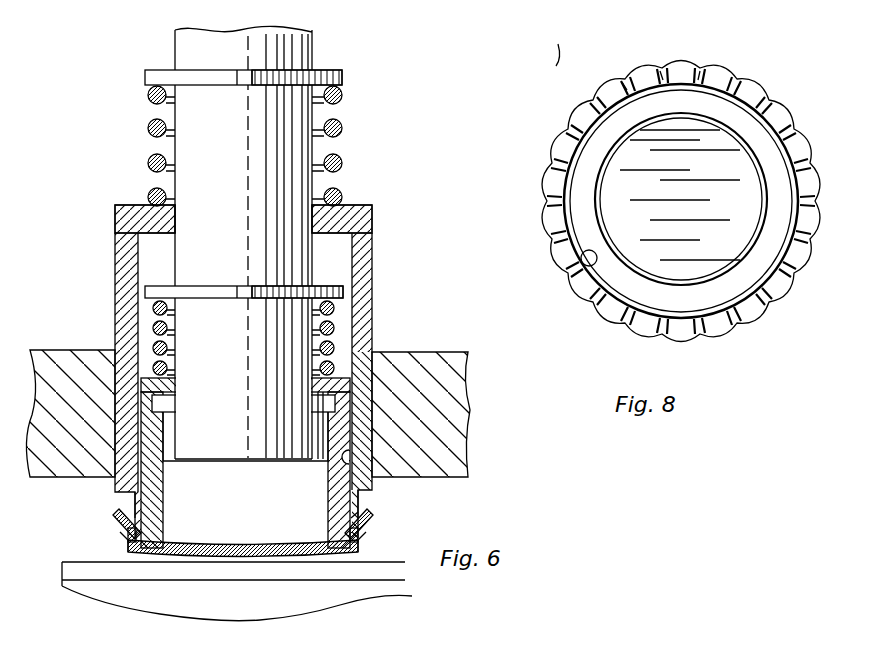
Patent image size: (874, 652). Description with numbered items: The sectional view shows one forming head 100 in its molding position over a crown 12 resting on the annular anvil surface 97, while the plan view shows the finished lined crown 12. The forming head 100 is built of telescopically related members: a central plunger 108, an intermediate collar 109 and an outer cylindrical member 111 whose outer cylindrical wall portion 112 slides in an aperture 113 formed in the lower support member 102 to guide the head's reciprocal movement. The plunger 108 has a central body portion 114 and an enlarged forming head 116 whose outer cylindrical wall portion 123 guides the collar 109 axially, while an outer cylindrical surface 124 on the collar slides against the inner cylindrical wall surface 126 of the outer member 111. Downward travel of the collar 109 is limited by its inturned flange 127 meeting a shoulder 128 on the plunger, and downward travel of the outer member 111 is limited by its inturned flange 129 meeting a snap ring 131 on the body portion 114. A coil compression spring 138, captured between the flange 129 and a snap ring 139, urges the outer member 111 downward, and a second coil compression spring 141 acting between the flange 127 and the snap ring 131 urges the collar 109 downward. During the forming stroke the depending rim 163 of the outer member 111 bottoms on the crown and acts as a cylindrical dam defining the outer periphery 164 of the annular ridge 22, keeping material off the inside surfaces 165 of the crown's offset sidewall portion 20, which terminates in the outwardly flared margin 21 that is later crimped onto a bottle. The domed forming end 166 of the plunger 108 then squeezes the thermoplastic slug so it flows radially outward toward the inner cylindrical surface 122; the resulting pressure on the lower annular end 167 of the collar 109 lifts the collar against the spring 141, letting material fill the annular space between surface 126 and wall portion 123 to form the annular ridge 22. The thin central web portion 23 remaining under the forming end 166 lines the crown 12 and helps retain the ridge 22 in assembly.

In FIG. 6, the forming head 100 is at (358, 128).
In FIG. 6, the snap ring 139 is at (147, 82).
In FIG. 6, the coil compression spring 138 is at (343, 98).
In FIG. 6, the central body portion 114 is at (186, 143).
In FIG. 6, the inturned flange 129 is at (345, 212).
In FIG. 6, the central plunger 108 is at (173, 250).
In FIG. 6, the outer cylindrical member 111 is at (125, 288).
In FIG. 6, the outer cylindrical wall portion 112 is at (374, 296).
In FIG. 6, the aperture 113 is at (372, 350).
In FIG. 6, the coil compression spring 141 is at (336, 326).
In FIG. 6, the snap ring 131 is at (207, 298).
In FIG. 6, the outer cylindrical surface 124 is at (128, 405).
In FIG. 6, the lower support member 102 is at (444, 356).
In FIG. 6, the inturned flange 127 is at (168, 388).
In FIG. 6, the intermediate collar 109 is at (160, 428).
In FIG. 6, the shoulder 128 is at (174, 466).
In FIG. 6, the inner cylindrical surface 122 is at (318, 432).
In FIG. 6, the inner cylindrical wall surface 126 is at (367, 478).
In FIG. 6, the inside surfaces 165 is at (153, 545).
In FIG. 8, the inside surfaces 165 is at (590, 266).
In FIG. 6, the depending rim 163 is at (135, 505).
In FIG. 6, the outer cylindrical wall portion 123 is at (362, 496).
In FIG. 6, the enlarged forming head 116 is at (364, 520).
In FIG. 6, the outwardly flared margin 21 is at (112, 516).
In FIG. 8, the outwardly flared margin 21 is at (650, 326).
In FIG. 6, the offset sidewall portion 20 is at (128, 536).
In FIG. 8, the offset sidewall portion 20 is at (610, 322).
In FIG. 6, the annular ridge 22 is at (142, 541).
In FIG. 8, the annular ridge 22 is at (592, 162).
In FIG. 6, the forming end 166 is at (226, 553).
In FIG. 6, the outer periphery 164 is at (130, 552).
In FIG. 8, the outer periphery 164 is at (600, 116).
In FIG. 6, the lower annular end 167 is at (340, 548).
In FIG. 6, the crown 12 is at (246, 555).
In FIG. 8, the crown 12 is at (660, 214).
In FIG. 6, the annular anvil surface 97 is at (68, 562).
In FIG. 8, the central web portion 23 is at (612, 216).